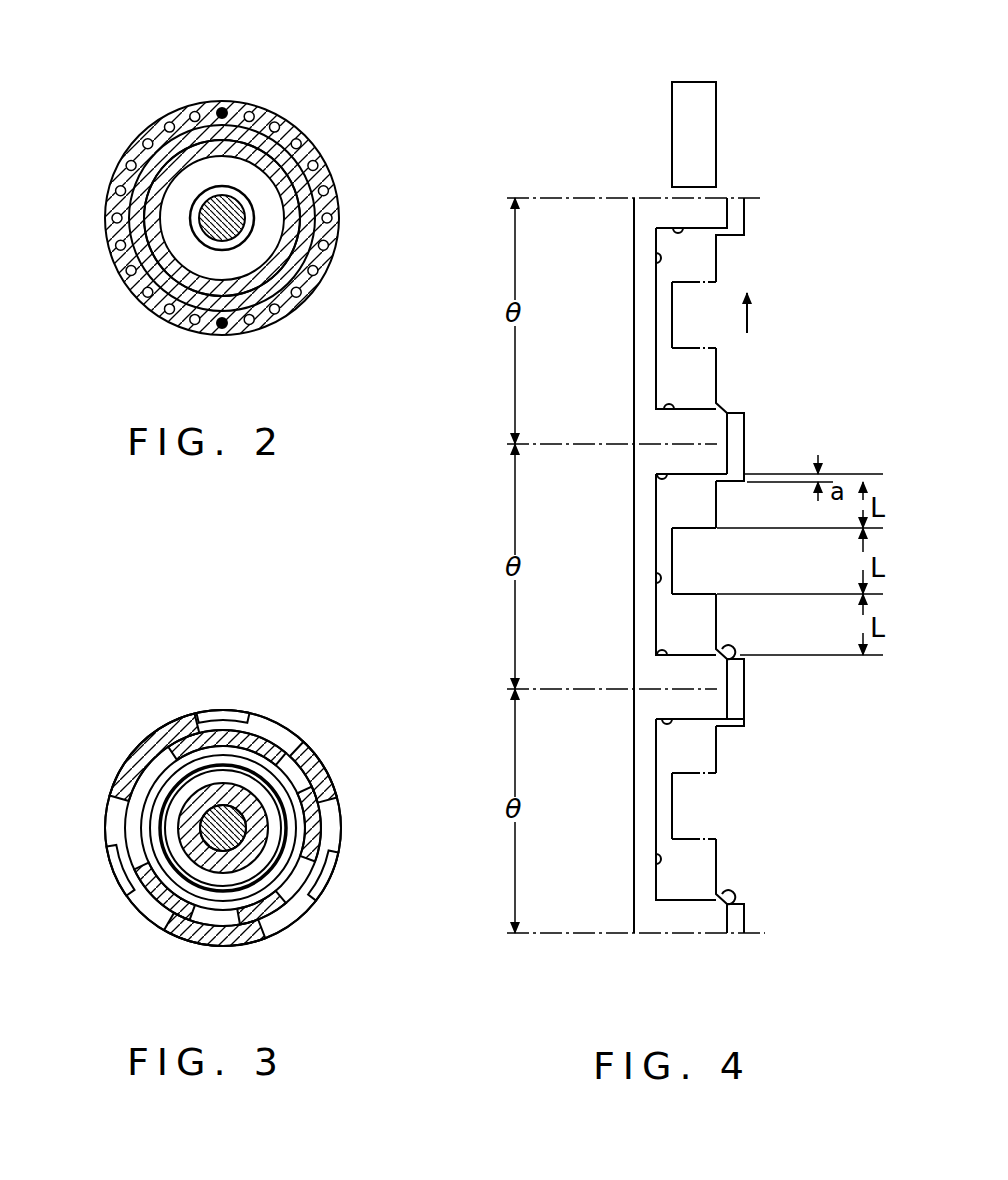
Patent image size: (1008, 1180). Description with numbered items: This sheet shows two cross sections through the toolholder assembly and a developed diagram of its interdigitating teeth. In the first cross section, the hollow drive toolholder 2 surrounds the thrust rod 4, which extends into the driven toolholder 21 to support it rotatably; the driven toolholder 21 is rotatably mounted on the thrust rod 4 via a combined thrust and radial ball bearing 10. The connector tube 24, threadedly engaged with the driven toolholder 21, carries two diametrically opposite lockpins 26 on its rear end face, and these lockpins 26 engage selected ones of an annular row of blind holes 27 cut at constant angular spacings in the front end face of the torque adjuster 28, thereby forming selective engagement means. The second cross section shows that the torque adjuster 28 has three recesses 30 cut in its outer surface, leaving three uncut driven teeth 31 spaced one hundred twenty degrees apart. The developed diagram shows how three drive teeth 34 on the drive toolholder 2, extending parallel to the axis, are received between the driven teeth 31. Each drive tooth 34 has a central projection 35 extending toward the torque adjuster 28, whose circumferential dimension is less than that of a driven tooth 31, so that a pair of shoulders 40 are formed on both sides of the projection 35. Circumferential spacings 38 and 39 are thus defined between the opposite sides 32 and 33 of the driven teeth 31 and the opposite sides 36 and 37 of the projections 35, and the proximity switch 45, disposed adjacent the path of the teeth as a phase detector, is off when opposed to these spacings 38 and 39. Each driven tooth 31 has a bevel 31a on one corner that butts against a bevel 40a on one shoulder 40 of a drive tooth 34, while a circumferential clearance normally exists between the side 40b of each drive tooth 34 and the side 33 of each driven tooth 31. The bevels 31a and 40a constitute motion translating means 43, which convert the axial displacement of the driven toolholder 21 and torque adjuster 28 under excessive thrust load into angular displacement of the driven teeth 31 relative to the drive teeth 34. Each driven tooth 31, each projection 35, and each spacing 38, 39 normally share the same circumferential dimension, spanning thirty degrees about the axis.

In FIG. 4, the drive toolholder 2 is at (746, 261).
In FIG. 2, the thrust rod 4 is at (207, 221).
In FIG. 2, the combined thrust and radial ball bearing 10 is at (291, 311).
In FIG. 2, the driven toolholder 21 is at (181, 293).
In FIG. 2, the connector tube 24 is at (303, 253).
In FIG. 2, the lockpin 26 is at (221, 110).
In FIG. 2, the blind holes 27 is at (167, 126).
In FIG. 2, the torque adjuster 28 is at (326, 180).
In FIG. 3, the torque adjuster 28 is at (349, 815).
In FIG. 4, the torque adjuster 28 is at (634, 238).
In FIG. 3, the recess 30 is at (293, 752).
In FIG. 4, the recess 30 is at (656, 258).
In FIG. 3, the driven tooth 31 is at (132, 766).
In FIG. 4, the driven tooth 31 is at (713, 209).
In FIG. 4, the bevel 31a is at (733, 650).
In FIG. 4, the side of driven tooth 32 is at (667, 400).
In FIG. 4, the side of driven tooth 33 is at (678, 233).
In FIG. 4, the drive tooth 34 is at (670, 316).
In FIG. 3, the central projection 35 is at (222, 712).
In FIG. 4, the central projection 35 is at (673, 563).
In FIG. 4, the side of projection 36 is at (705, 533).
In FIG. 4, the side of projection 37 is at (700, 597).
In FIG. 3, the circumferential spacing 38 is at (268, 730).
In FIG. 4, the circumferential spacing 38 is at (693, 484).
In FIG. 3, the circumferential spacing 39 is at (170, 728).
In FIG. 4, the circumferential spacing 39 is at (672, 632).
In FIG. 4, the shoulder 40 is at (713, 618).
In FIG. 4, the bevel 40a is at (733, 668).
In FIG. 4, the side of drive tooth 40b is at (733, 480).
In FIG. 4, the motion translating means 43 is at (829, 744).
In FIG. 4, the proximity switch 45 is at (688, 82).